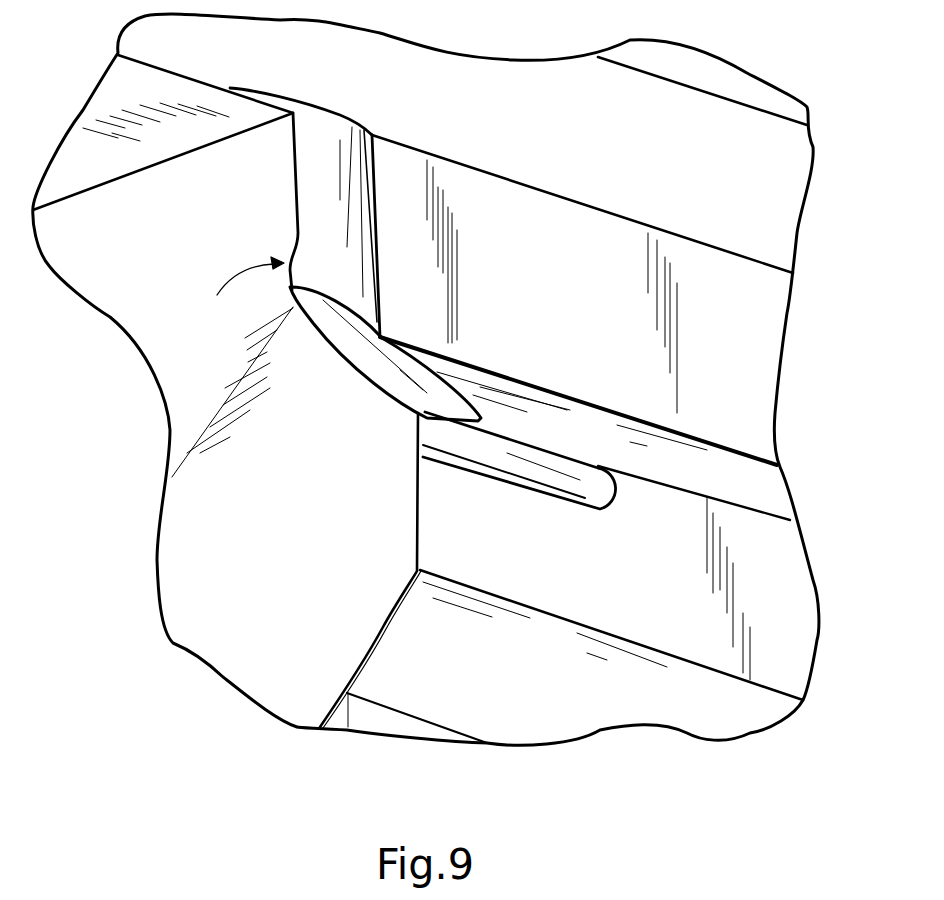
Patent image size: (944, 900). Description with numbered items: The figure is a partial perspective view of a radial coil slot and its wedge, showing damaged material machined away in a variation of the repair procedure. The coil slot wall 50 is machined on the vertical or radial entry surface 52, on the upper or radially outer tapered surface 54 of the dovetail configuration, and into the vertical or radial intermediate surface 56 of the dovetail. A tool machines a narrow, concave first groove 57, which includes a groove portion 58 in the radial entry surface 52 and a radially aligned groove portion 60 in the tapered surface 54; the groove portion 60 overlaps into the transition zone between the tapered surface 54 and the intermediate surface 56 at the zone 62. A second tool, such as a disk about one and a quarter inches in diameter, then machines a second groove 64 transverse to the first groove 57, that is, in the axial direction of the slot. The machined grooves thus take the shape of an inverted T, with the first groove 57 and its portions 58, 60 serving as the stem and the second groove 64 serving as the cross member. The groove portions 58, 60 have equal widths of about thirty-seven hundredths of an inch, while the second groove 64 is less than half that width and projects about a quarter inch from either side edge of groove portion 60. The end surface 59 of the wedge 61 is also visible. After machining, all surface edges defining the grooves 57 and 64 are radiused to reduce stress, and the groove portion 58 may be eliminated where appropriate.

The coil slot wall 50 is at (742, 413).
The radial entry surface 52 is at (510, 213).
The radially outer tapered surface 54 is at (763, 490).
The radial intermediate surface 56 is at (772, 628).
The first groove 57 is at (243, 291).
The groove portion 58 is at (303, 122).
The end surface 59 is at (103, 283).
The groove portion 60 is at (355, 340).
The wedge 61 is at (125, 87).
The transition zone 62 is at (440, 419).
The second groove 64 is at (490, 460).